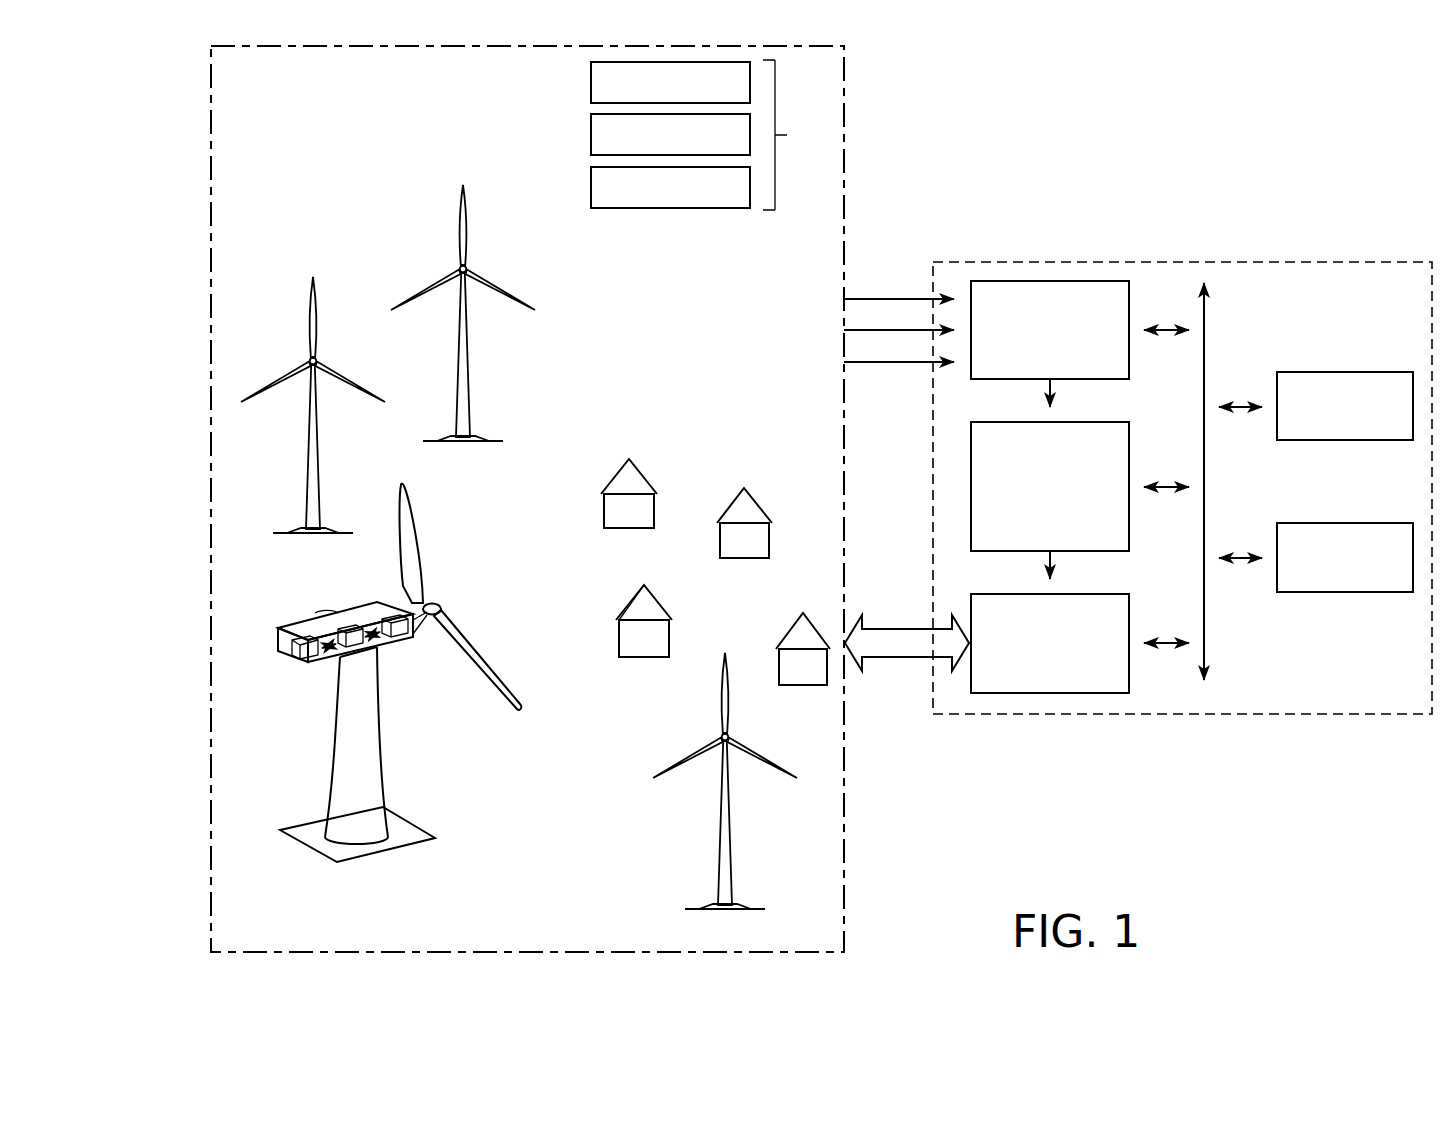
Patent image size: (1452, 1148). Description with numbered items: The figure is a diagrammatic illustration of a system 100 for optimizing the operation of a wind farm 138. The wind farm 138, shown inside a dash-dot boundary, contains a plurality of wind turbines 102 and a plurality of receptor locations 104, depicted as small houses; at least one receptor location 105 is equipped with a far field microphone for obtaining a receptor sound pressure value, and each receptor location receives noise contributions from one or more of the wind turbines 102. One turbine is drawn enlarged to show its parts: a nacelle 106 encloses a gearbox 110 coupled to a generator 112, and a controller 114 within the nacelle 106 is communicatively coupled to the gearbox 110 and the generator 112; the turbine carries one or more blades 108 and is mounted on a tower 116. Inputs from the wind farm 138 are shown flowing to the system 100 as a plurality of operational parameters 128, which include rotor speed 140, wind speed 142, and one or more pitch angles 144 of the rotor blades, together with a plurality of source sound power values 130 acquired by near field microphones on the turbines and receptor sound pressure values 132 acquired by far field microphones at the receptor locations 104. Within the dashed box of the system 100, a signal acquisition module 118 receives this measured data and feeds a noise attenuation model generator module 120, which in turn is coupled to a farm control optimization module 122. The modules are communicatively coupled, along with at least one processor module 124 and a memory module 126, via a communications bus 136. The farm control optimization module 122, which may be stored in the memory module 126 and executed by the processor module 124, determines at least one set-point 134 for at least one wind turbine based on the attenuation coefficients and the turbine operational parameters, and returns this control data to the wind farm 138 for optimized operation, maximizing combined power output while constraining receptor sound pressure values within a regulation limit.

The system 100 is at (1289, 258).
The wind turbines 102 is at (328, 340).
The receptor locations 104 is at (782, 627).
The receptor location 105 is at (622, 607).
The nacelle 106 is at (374, 673).
The blades 108 is at (418, 548).
The gearbox 110 is at (416, 638).
The generator 112 is at (368, 644).
The controller 114 is at (297, 656).
The tower 116 is at (337, 803).
The signal acquisition module 118 is at (1083, 281).
The noise attenuation model generator module 120 is at (1130, 456).
The farm control optimization module 122 is at (1130, 625).
The processor module 124 is at (1345, 372).
The memory module 126 is at (1345, 523).
The operational parameters 128 is at (692, 176).
The source sound power values 130 is at (862, 330).
The receptor sound pressure values 132 is at (872, 362).
The set-point 134 is at (883, 615).
The communications bus 136 is at (1206, 604).
The wind farm 138 is at (210, 193).
The rotor speed 140 is at (591, 81).
The wind speed 142 is at (591, 134).
The pitch angles 144 is at (591, 187).